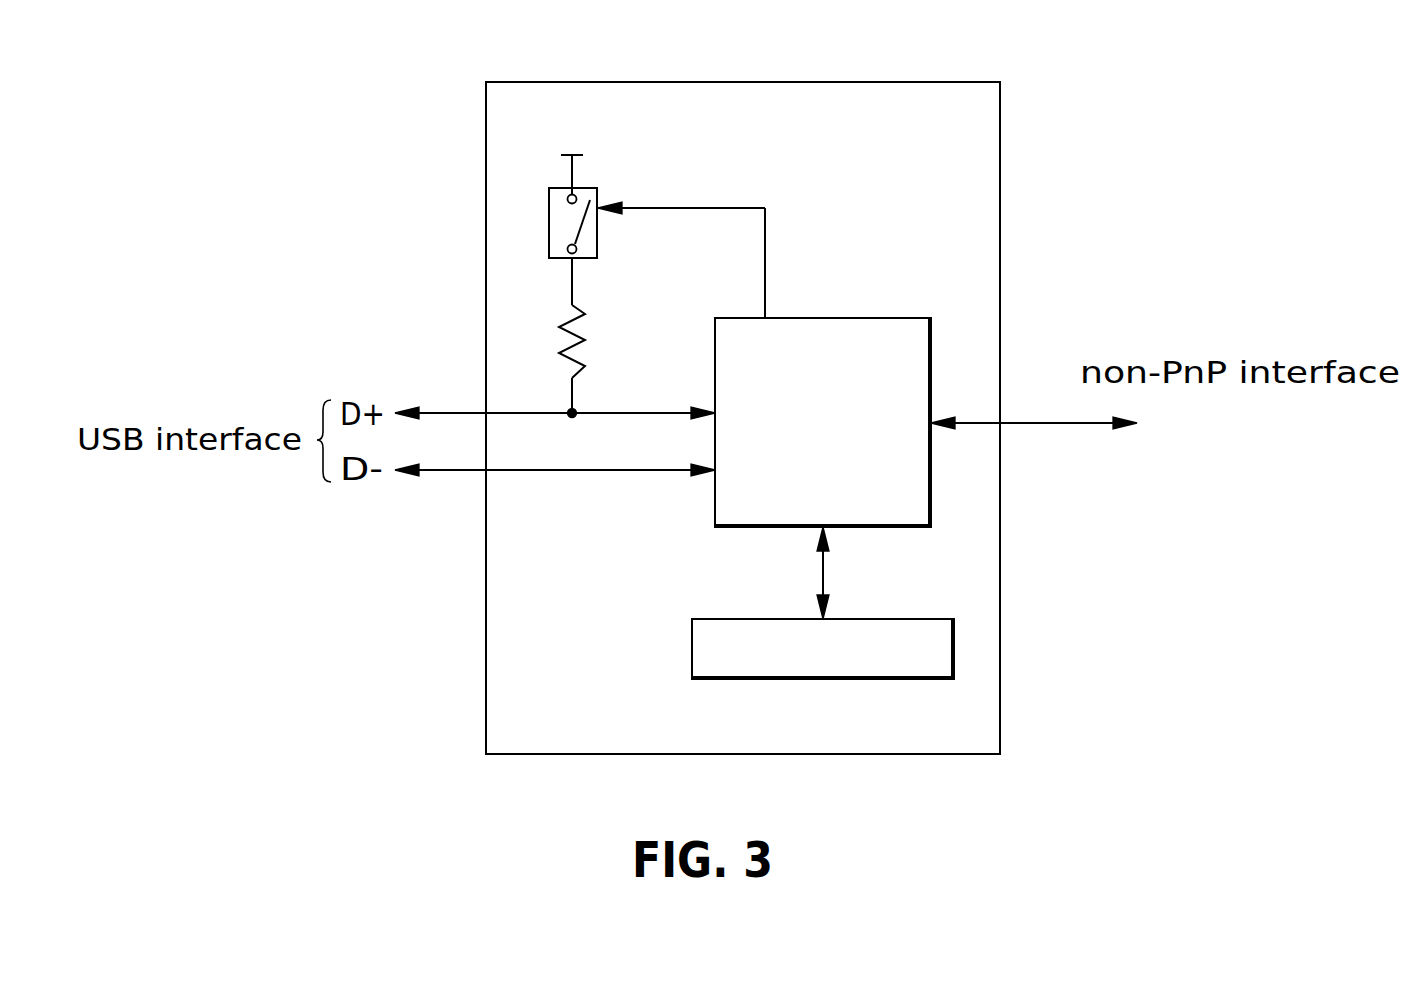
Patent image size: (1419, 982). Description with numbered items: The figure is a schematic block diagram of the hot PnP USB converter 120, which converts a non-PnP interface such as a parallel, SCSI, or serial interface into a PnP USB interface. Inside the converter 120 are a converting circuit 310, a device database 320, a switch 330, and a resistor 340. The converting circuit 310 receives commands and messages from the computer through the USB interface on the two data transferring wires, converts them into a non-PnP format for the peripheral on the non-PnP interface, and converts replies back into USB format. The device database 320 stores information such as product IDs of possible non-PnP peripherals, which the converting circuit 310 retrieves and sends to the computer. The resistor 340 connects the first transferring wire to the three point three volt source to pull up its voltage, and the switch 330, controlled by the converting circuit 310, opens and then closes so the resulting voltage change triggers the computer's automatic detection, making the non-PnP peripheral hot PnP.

The USB converter 120 is at (868, 81).
The converting circuit 310 is at (833, 318).
The device database 320 is at (778, 617).
The switch 330 is at (597, 228).
The resistor 340 is at (583, 343).